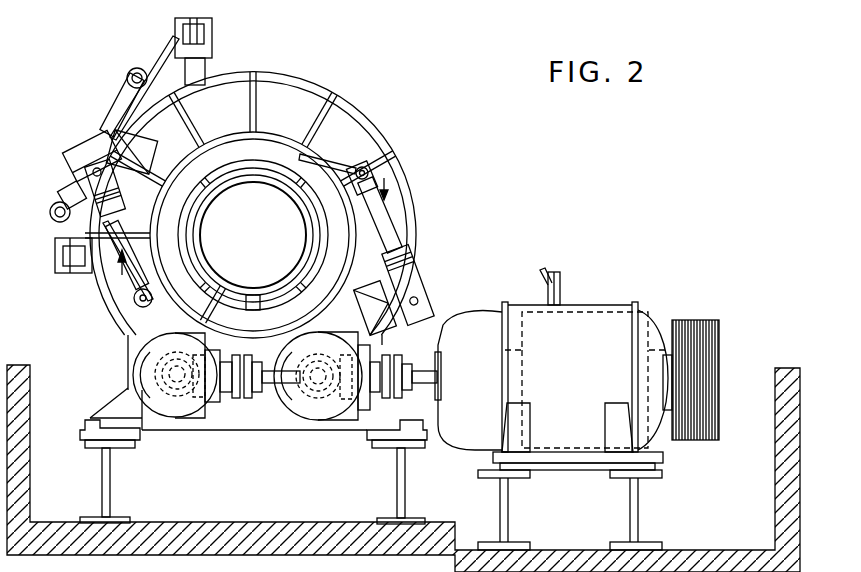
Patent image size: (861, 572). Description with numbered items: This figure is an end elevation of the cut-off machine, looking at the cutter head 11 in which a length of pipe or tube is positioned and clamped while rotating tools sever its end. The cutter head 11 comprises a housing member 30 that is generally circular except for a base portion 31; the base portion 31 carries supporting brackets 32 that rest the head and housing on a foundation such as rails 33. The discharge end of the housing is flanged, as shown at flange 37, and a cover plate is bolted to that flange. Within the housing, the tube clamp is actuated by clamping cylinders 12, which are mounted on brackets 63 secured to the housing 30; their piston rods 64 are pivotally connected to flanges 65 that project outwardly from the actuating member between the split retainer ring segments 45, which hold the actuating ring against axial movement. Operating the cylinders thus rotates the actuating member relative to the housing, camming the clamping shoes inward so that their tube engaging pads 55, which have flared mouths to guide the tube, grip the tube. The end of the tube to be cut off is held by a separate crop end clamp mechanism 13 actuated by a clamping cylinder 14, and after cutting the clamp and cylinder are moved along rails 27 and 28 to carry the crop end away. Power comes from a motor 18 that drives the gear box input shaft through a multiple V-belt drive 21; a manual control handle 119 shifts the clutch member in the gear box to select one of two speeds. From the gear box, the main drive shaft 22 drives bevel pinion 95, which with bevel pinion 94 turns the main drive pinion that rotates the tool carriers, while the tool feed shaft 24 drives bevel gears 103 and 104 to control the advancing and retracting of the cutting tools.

The cutter head 11 is at (372, 114).
The clamping cylinders 12 is at (70, 196).
The crop end clamp mechanism 13 is at (122, 88).
The clamping cylinder 14 is at (78, 172).
The motor 18 is at (611, 318).
The multiple V-belt drive 21 is at (700, 316).
The main drive shaft 22 is at (406, 382).
The tool feed shaft 24 is at (257, 430).
The rail 27 is at (212, 45).
The rail 28 is at (57, 258).
The housing member 30 is at (383, 137).
The base portion 31 is at (118, 398).
The supporting brackets 32 is at (82, 434).
The rails 33 is at (125, 450).
The flange 37 is at (400, 180).
The split retainer ring segments 45 is at (282, 143).
The tube engaging pads 55 is at (268, 178).
The brackets 63 is at (140, 146).
The piston rods 64 is at (127, 257).
The flanges 65 is at (165, 304).
The bevel pinion 94 is at (313, 400).
The bevel pinion 95 is at (342, 400).
The bevel gear 103 is at (173, 392).
The bevel gear 104 is at (195, 392).
The manual control handle 119 is at (560, 275).